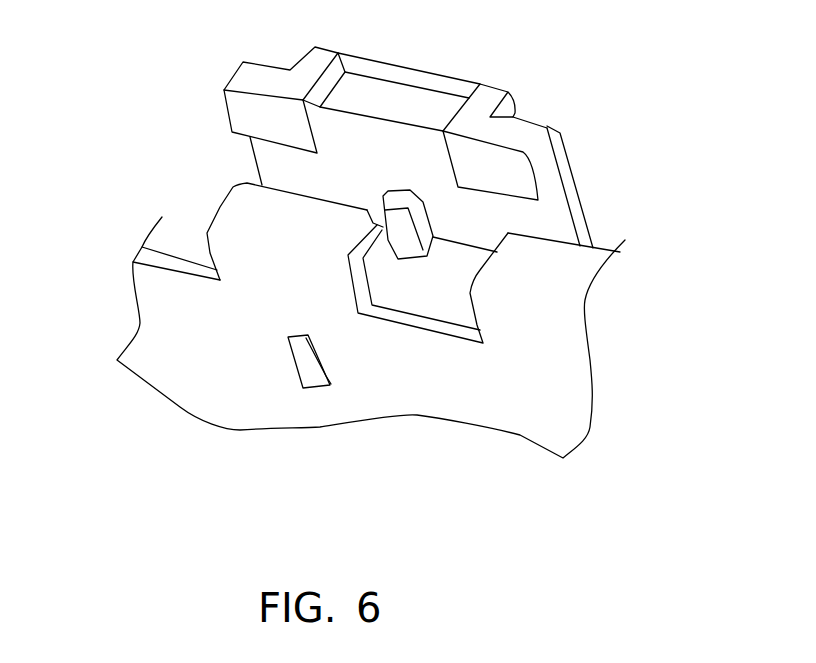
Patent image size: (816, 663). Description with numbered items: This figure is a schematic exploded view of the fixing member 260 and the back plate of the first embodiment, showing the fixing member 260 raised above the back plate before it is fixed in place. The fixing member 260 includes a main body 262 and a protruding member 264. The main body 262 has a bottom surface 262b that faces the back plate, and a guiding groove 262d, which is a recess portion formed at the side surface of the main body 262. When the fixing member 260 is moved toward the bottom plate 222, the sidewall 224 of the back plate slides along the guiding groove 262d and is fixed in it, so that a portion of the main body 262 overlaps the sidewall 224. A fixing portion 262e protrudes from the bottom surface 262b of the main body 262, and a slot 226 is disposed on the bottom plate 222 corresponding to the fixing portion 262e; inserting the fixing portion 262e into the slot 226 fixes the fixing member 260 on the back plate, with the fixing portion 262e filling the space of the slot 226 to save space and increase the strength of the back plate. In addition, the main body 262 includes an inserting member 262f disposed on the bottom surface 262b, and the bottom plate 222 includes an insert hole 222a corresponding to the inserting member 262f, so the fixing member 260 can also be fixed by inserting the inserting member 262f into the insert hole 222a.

The bottom plate 222 is at (555, 400).
The insert hole 222a is at (311, 364).
The sidewall 224 is at (287, 210).
The slot 226 is at (444, 293).
The fixing member 260 is at (525, 89).
The main body 262 is at (458, 269).
The bottom surface 262b is at (483, 215).
The guiding groove 262d is at (361, 90).
The fixing portion 262e is at (288, 127).
The inserting member 262f is at (408, 238).
The protruding member 264 is at (440, 83).